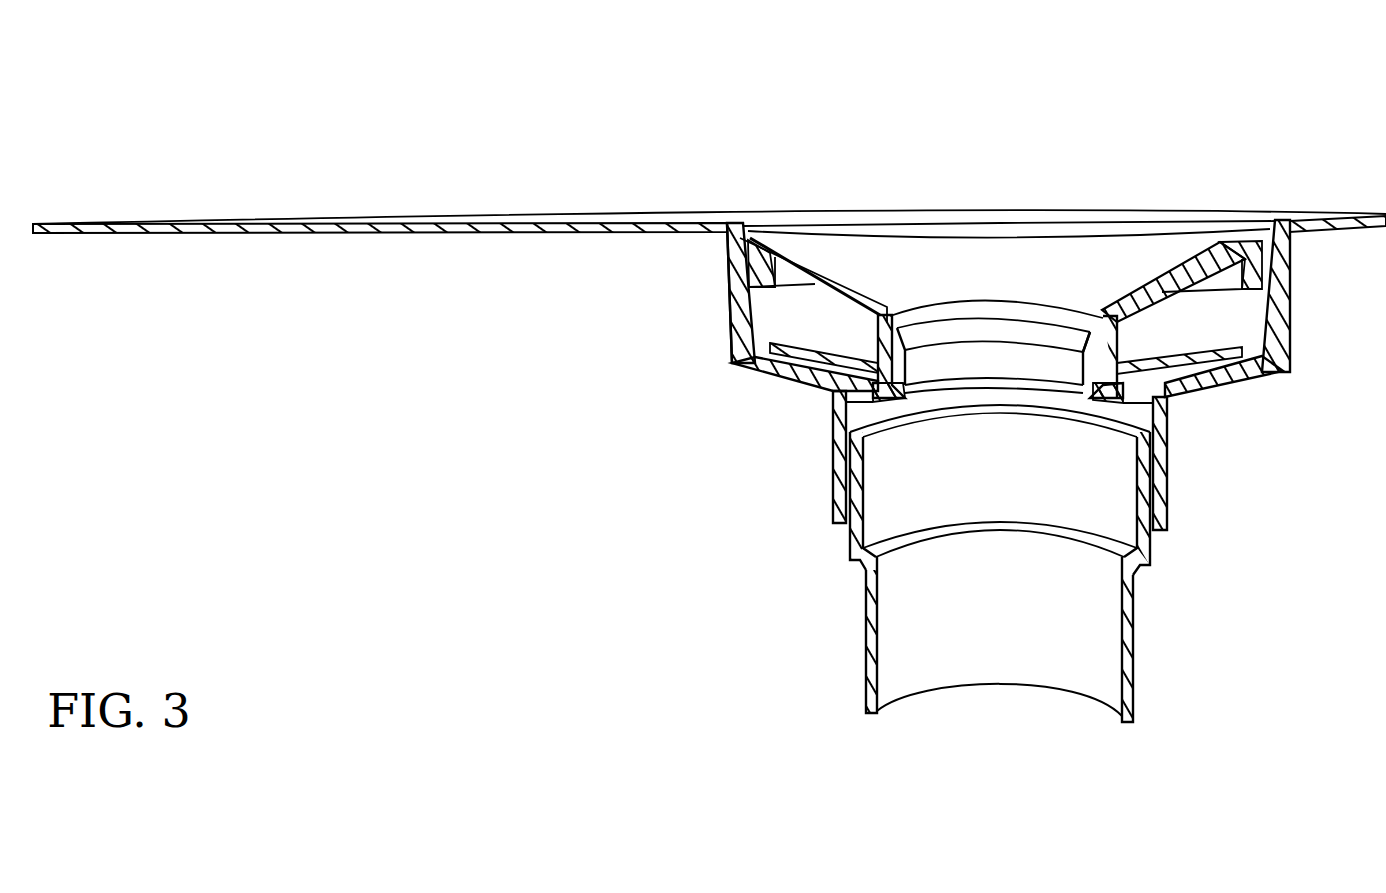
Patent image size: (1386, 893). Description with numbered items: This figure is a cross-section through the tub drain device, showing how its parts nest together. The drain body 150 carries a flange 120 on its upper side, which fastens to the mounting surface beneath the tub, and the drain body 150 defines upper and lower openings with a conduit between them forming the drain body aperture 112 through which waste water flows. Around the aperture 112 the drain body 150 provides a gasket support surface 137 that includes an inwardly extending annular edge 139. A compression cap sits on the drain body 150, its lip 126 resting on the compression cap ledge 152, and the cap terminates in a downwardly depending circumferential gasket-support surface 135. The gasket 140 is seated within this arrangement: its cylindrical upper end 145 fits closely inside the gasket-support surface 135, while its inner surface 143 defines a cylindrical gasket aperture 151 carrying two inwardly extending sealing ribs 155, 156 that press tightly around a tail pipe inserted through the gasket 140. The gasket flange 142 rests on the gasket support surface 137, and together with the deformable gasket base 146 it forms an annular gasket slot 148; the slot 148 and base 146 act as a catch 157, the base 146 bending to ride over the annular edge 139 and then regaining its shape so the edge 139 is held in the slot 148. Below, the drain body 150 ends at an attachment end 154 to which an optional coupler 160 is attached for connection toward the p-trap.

The drain body aperture 112 is at (1004, 160).
The flange 120 is at (667, 232).
The lip 126 is at (746, 266).
The gasket-support surface 135 is at (760, 372).
The gasket support surface 137 is at (821, 355).
The annular edge 139 is at (1079, 394).
The gasket 140 is at (938, 370).
The gasket flange 142 is at (791, 333).
The inner surface 143 is at (918, 336).
The upper end 145 is at (1165, 258).
The gasket base 146 is at (850, 425).
The gasket slot 148 is at (838, 411).
The drain body 150 is at (733, 350).
The gasket aperture 151 is at (1005, 350).
The compression cap ledge 152 is at (752, 275).
The attachment end 154 is at (1165, 497).
The sealing rib 155 is at (1050, 395).
The sealing rib 156 is at (1080, 335).
The catch 157 is at (1128, 415).
The coupler 160 is at (999, 639).